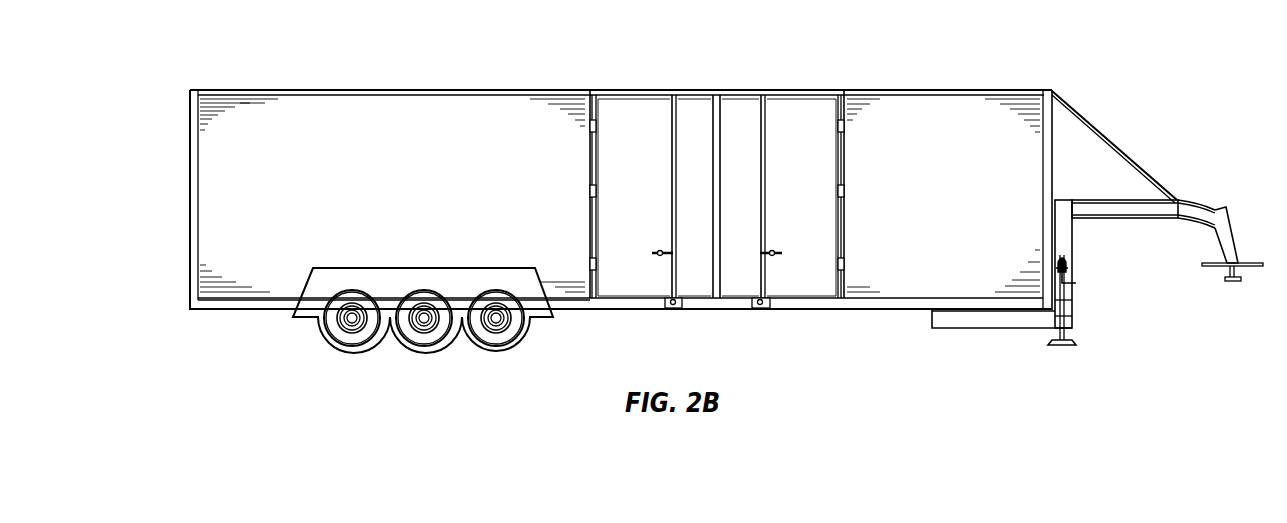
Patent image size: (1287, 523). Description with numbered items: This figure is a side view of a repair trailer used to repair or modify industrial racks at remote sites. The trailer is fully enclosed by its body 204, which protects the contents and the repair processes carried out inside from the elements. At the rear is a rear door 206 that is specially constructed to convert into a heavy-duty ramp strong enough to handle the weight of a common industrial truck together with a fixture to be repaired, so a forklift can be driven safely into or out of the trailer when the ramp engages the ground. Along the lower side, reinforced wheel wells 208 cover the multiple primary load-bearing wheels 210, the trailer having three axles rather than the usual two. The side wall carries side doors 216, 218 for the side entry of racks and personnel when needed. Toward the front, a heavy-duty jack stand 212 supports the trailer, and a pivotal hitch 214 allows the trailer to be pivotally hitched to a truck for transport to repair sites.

The body 204 is at (300, 108).
The rear door 206 is at (192, 207).
The wheel wells 208 is at (545, 310).
The primary load-bearing wheels 210 is at (496, 347).
The jack stand 212 is at (1072, 332).
The pivotal hitch 214 is at (1232, 281).
The side door 216 is at (645, 108).
The side door 218 is at (805, 288).